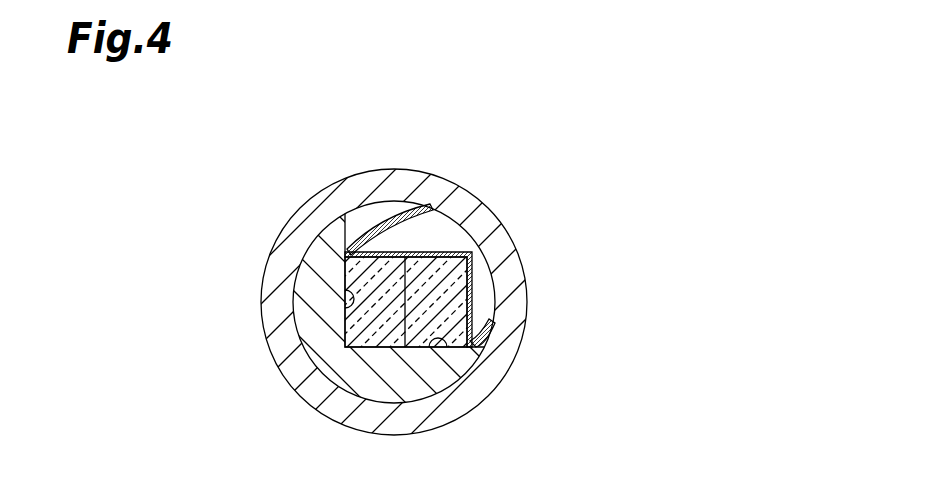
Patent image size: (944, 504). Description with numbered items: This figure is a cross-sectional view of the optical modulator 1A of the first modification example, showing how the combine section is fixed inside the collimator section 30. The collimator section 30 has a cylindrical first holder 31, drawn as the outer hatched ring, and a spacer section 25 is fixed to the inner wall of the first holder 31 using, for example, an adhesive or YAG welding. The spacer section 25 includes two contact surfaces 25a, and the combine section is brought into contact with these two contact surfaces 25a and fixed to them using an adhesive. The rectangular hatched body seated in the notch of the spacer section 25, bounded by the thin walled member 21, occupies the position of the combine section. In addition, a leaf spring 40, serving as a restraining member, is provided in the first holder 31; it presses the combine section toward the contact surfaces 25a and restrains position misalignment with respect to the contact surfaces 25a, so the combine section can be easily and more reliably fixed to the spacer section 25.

The optical modulator 1A is at (603, 110).
The collimator section 30 is at (466, 189).
The first holder 31 is at (313, 383).
The spacer section 25 is at (432, 377).
The contact surfaces 25a is at (343, 290).
The housing 21 is at (455, 280).
The leaf spring 40 is at (383, 227).